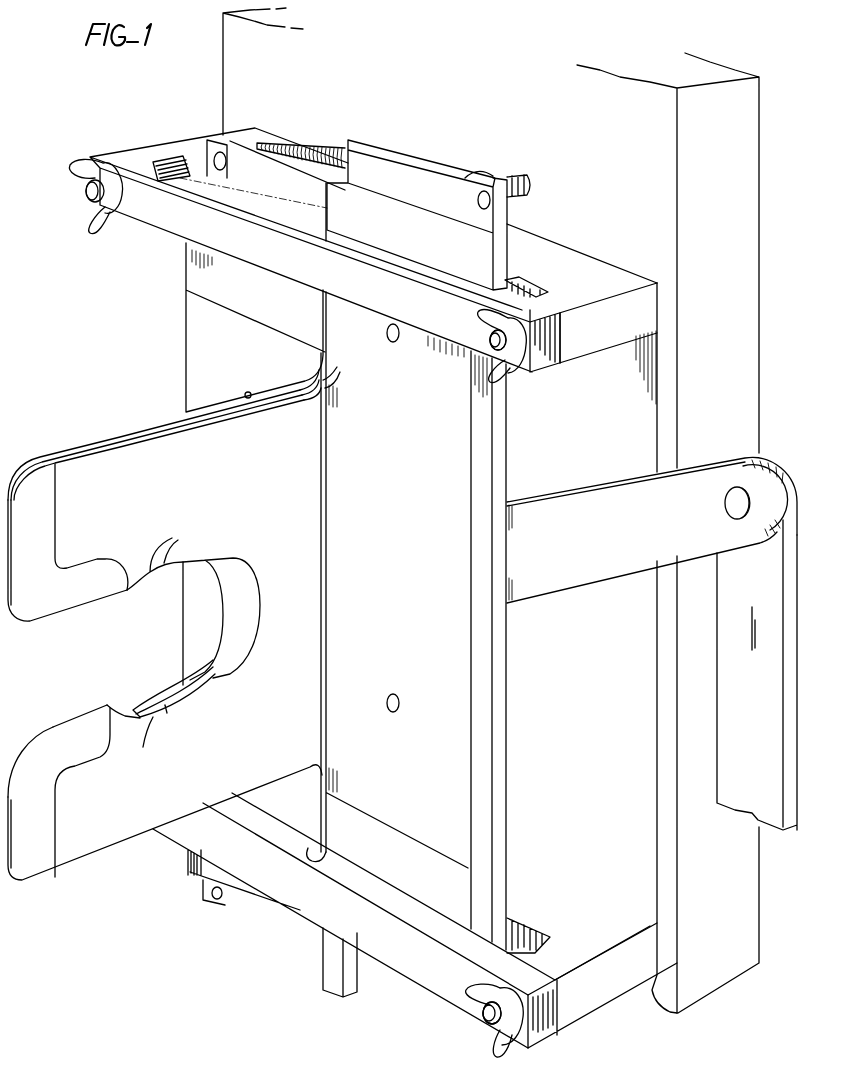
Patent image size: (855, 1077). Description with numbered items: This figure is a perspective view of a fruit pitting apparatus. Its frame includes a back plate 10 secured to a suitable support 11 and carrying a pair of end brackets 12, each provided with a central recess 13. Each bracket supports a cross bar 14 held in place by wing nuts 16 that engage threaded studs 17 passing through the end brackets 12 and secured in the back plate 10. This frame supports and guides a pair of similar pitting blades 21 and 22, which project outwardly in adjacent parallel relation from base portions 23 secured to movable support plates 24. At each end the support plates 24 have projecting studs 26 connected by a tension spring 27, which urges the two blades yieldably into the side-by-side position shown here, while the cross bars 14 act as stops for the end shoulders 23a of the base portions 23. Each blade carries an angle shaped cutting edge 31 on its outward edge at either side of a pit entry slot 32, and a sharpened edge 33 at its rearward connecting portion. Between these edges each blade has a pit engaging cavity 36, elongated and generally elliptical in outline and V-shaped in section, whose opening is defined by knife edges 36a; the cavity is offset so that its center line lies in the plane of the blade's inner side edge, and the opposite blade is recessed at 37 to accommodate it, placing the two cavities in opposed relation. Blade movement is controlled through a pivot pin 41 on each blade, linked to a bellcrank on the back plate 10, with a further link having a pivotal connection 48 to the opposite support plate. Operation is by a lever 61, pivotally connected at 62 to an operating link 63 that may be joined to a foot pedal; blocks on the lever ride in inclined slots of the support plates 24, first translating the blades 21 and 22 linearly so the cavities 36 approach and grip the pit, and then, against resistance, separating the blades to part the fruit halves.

The back plate 10 is at (665, 402).
The support 11 is at (748, 393).
The end brackets 12 is at (641, 334).
The central recess 13 is at (180, 158).
The cross bar 14 is at (553, 348).
The wing nuts 16 is at (95, 172).
The threaded studs 17 is at (490, 340).
The pitting blade 21 is at (127, 838).
The pitting blade 22 is at (121, 437).
The base portions 23 is at (242, 377).
The end shoulders 23a is at (327, 858).
The support plates 24 is at (500, 643).
The projecting studs 26 is at (222, 152).
The tension spring 27 is at (488, 172).
The angle shaped cutting edge 31 is at (42, 603).
The pit entry slot 32 is at (118, 649).
The sharpened edge 33 is at (246, 628).
The pit engaging cavity 36 is at (178, 700).
The knife edges 36a is at (165, 713).
The recess 37 is at (175, 560).
The pivot pin 41 is at (394, 342).
The pivotal connection 48 is at (394, 712).
The lever 61 is at (592, 567).
The pivotal connection 62 is at (737, 512).
The operating link 63 is at (750, 815).